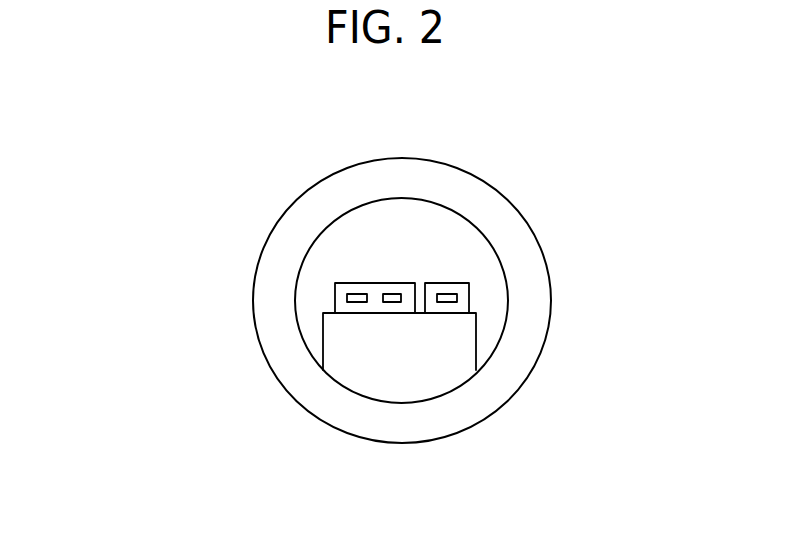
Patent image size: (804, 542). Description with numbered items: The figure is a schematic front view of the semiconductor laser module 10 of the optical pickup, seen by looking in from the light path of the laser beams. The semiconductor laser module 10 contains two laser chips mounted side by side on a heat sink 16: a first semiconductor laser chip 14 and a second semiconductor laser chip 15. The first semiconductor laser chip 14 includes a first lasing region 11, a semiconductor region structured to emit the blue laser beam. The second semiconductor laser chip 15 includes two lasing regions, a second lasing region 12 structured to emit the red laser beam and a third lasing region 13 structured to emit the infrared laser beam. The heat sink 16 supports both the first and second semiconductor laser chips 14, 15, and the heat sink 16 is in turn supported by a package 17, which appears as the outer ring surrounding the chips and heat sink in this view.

The semiconductor laser module 10 is at (379, 298).
The first lasing region 11 is at (452, 290).
The second lasing region 12 is at (398, 290).
The third lasing region 13 is at (350, 290).
The first semiconductor laser chip 14 is at (470, 300).
The second semiconductor laser chip 15 is at (337, 302).
The heat sink 16 is at (402, 355).
The package 17 is at (498, 381).